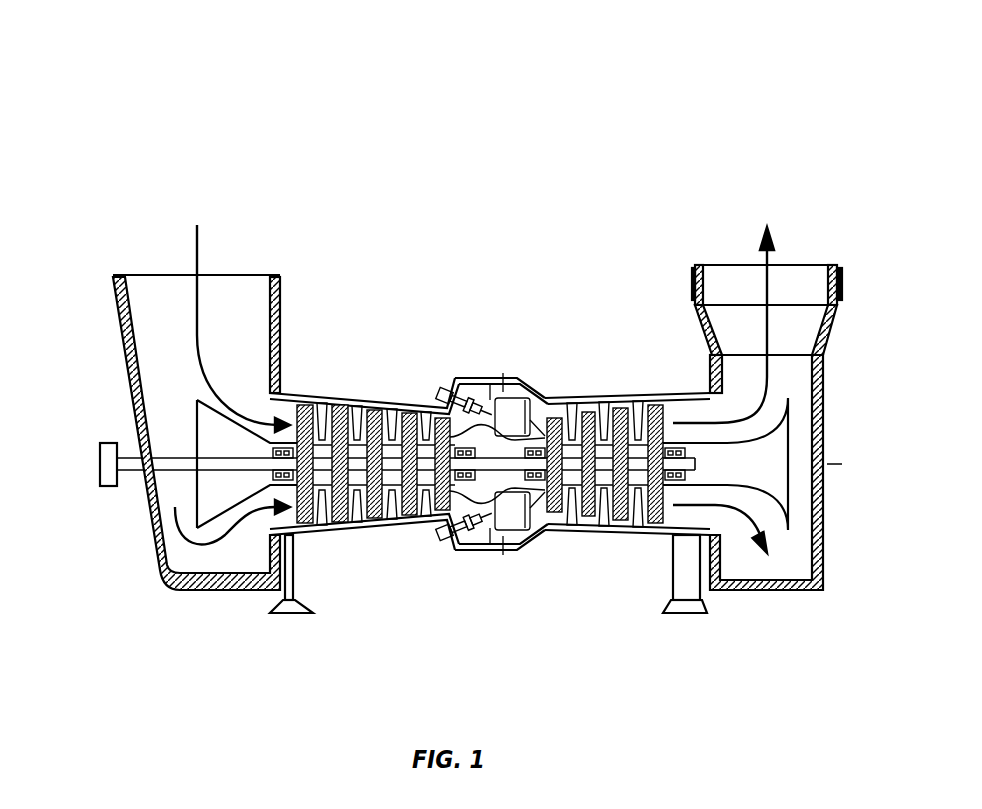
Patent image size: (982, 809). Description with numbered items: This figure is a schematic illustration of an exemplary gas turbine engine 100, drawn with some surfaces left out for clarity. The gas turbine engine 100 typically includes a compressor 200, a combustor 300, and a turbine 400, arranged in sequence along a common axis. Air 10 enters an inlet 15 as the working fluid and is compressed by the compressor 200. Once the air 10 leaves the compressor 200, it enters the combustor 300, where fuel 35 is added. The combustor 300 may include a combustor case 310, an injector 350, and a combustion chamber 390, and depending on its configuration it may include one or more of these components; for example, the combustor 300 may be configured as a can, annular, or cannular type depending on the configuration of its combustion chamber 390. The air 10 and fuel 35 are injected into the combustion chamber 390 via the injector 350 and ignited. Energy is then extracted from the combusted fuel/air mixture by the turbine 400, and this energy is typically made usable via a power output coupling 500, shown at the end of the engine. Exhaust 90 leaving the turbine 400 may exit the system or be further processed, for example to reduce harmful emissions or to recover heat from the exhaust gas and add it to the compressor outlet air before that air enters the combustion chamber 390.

The gas turbine engine 100 is at (124, 59).
The air 10 is at (196, 257).
The inlet 15 is at (121, 327).
The power output coupling 500 is at (112, 442).
The compressor 200 is at (452, 348).
The combustor 300 is at (547, 348).
The combustor case 310 is at (505, 552).
The injector 350 is at (452, 550).
The combustion chamber 390 is at (525, 533).
The fuel 35 is at (428, 382).
The turbine 400 is at (662, 348).
The exhaust 90 is at (765, 252).